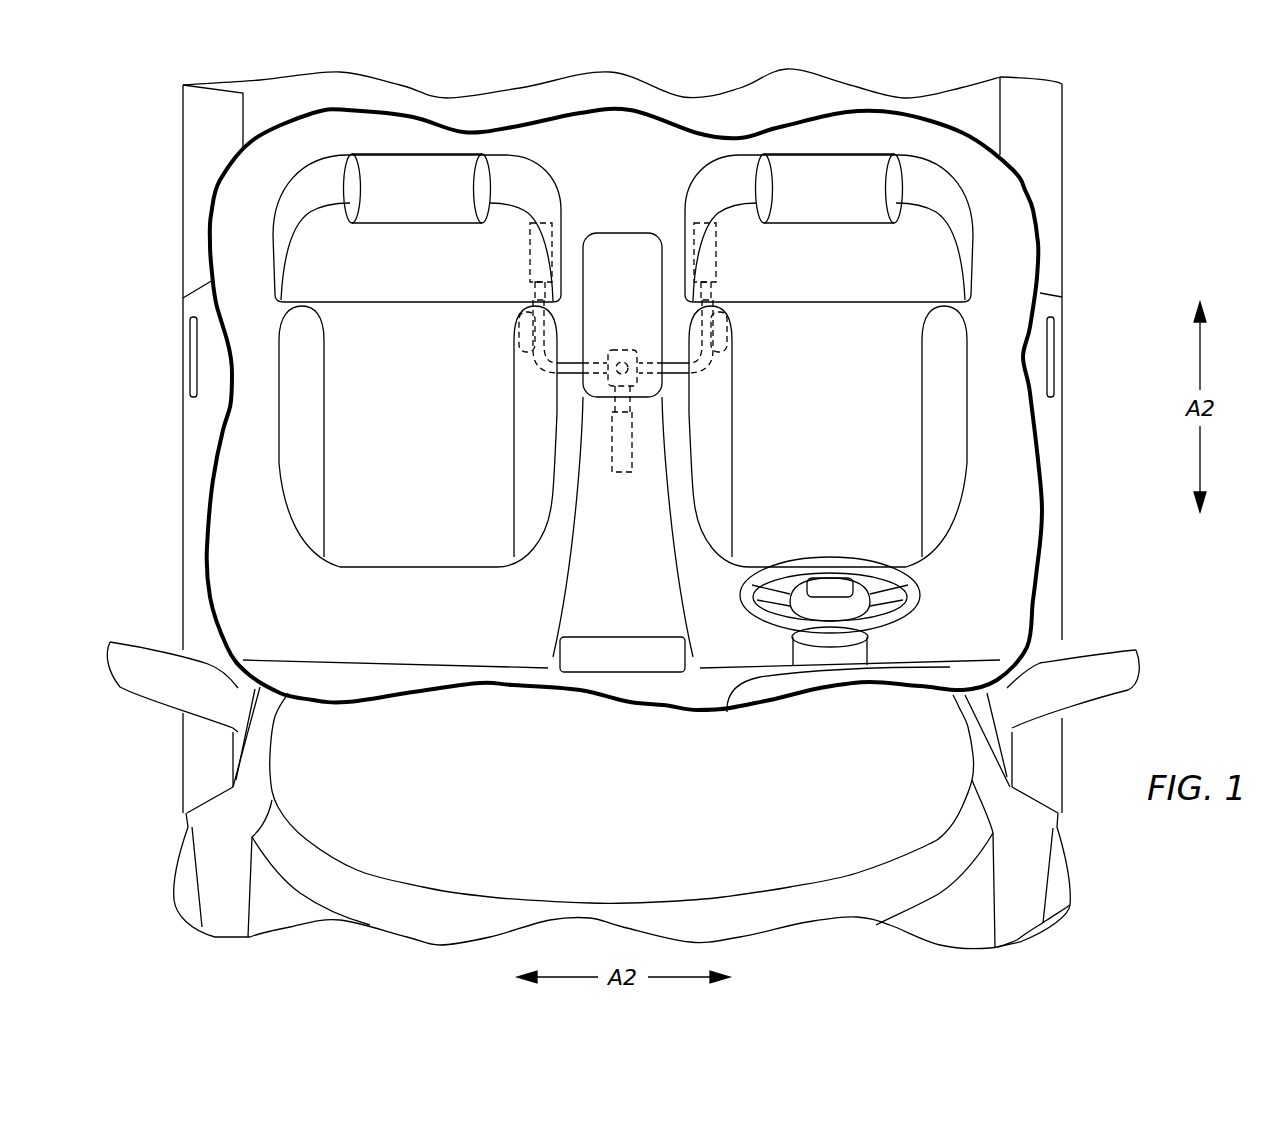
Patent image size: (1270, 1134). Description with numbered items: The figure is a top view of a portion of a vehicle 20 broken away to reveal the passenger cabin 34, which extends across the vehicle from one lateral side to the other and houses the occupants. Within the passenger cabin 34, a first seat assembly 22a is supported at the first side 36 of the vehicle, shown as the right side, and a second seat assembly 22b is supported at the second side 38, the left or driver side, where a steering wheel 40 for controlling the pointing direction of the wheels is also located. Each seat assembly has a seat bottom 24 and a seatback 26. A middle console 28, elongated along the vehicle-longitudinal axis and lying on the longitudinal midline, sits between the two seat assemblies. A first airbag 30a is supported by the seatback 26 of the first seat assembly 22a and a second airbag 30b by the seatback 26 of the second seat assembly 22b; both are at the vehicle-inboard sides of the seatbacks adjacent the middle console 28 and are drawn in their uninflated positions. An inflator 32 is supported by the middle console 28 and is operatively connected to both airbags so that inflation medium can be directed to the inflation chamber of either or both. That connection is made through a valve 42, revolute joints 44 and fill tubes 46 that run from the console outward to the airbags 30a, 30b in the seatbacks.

The vehicle 20 is at (1106, 114).
The first seat assembly 22a is at (323, 250).
The second seat assembly 22b is at (920, 248).
The seat bottom 24 is at (410, 547).
The seatback 26 is at (720, 183).
The middle console 28 is at (580, 425).
The first airbag 30a is at (530, 272).
The second airbag 30b is at (716, 272).
The inflator 32 is at (612, 455).
The passenger cabin 34 is at (997, 454).
The first side 36 is at (200, 457).
The second side 38 is at (1043, 610).
The steering wheel 40 is at (912, 600).
The valve 42 is at (620, 348).
The revolute joints 44 is at (533, 318).
The fill tubes 46 is at (520, 350).